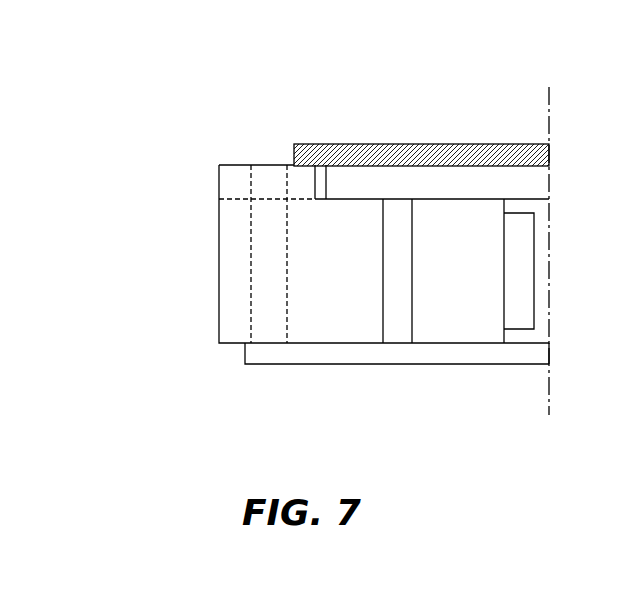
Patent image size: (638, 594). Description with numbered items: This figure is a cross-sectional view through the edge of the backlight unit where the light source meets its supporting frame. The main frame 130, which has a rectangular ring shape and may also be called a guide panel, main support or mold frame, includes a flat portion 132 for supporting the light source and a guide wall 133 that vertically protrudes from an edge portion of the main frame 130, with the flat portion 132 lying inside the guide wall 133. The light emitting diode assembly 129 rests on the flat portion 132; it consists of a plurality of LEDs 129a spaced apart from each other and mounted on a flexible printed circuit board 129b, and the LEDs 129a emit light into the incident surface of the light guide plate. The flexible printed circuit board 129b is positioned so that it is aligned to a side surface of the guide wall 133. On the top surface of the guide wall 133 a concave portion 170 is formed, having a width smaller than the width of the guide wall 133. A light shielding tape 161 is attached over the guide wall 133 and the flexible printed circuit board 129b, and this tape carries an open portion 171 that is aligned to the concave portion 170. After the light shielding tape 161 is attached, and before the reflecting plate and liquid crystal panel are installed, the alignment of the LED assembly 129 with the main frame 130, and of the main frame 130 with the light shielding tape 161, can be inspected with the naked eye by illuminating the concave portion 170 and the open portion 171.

The light emitting diode assembly 129 is at (418, 329).
The light emitting diode 129a is at (448, 280).
The flexible printed circuit board 129b is at (368, 183).
The main frame 130 is at (293, 264).
The flat portion 132 is at (319, 200).
The guide wall 133 is at (231, 187).
The light shielding tape 161 is at (441, 150).
The concave portion 170 is at (265, 182).
The open portion 171 is at (284, 147).